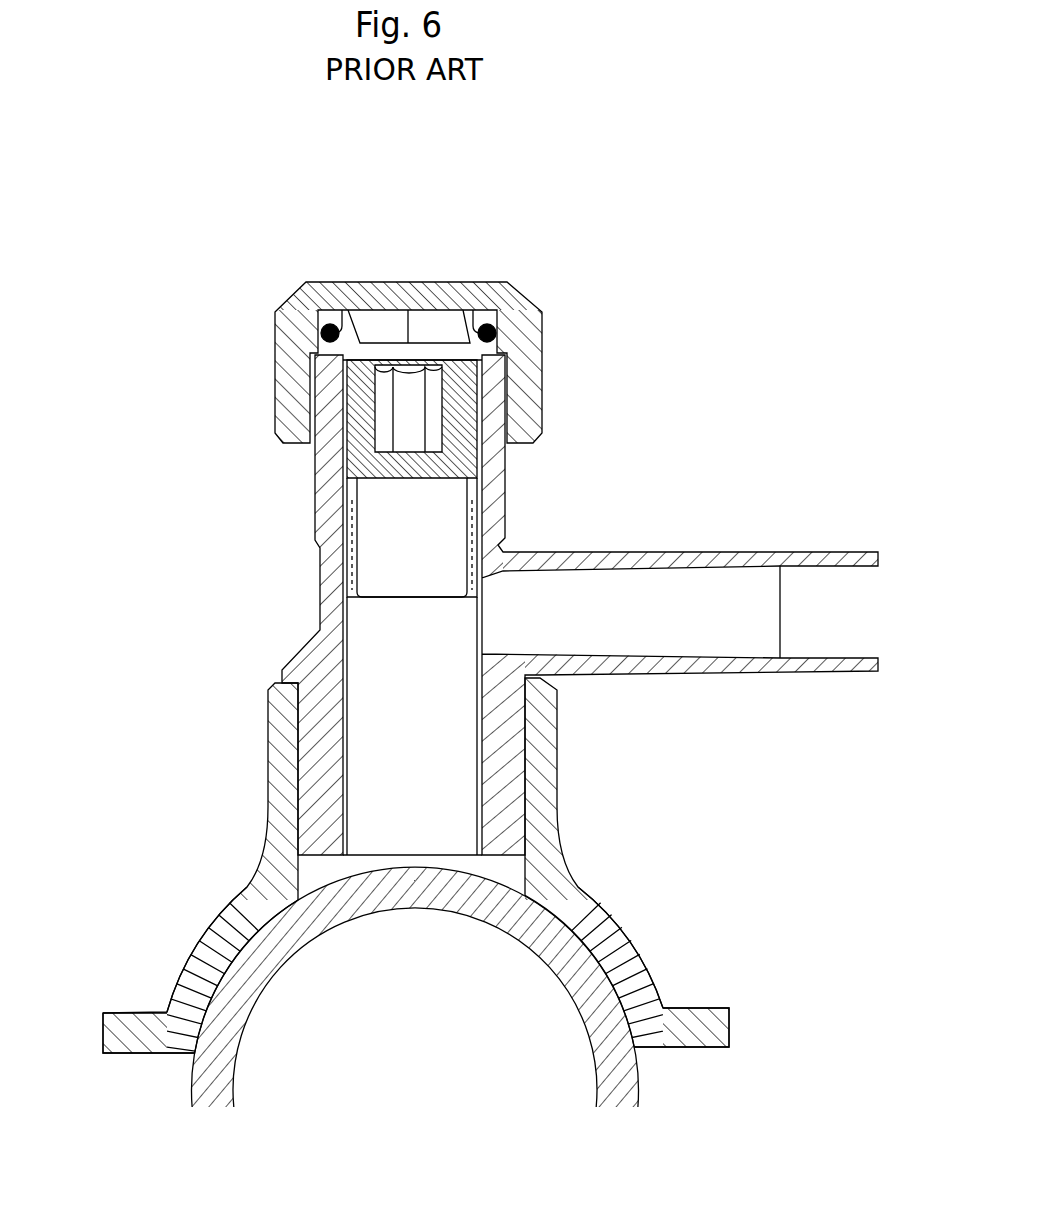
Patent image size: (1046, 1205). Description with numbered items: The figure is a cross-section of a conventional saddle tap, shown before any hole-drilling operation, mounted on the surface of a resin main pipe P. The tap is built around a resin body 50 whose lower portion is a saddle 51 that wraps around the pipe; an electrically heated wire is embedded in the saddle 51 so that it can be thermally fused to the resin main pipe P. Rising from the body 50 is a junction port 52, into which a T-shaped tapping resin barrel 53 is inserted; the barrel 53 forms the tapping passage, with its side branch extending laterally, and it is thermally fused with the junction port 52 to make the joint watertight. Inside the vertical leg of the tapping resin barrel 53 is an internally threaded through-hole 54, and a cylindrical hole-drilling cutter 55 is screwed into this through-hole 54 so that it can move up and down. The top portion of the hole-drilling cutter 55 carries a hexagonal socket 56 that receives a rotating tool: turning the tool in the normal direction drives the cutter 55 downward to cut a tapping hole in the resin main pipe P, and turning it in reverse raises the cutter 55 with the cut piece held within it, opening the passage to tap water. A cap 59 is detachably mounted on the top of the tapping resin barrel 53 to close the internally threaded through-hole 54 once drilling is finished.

The resin body 50 is at (218, 903).
The saddle 51 is at (230, 984).
The junction port 52 is at (320, 778).
The tapping resin barrel 53 is at (527, 527).
The internally threaded through-hole 54 is at (419, 735).
The hole-drilling cutter 55 is at (340, 472).
The hexagonal socket 56 is at (410, 397).
The cap 59 is at (545, 320).
The resin main pipe P is at (643, 1081).